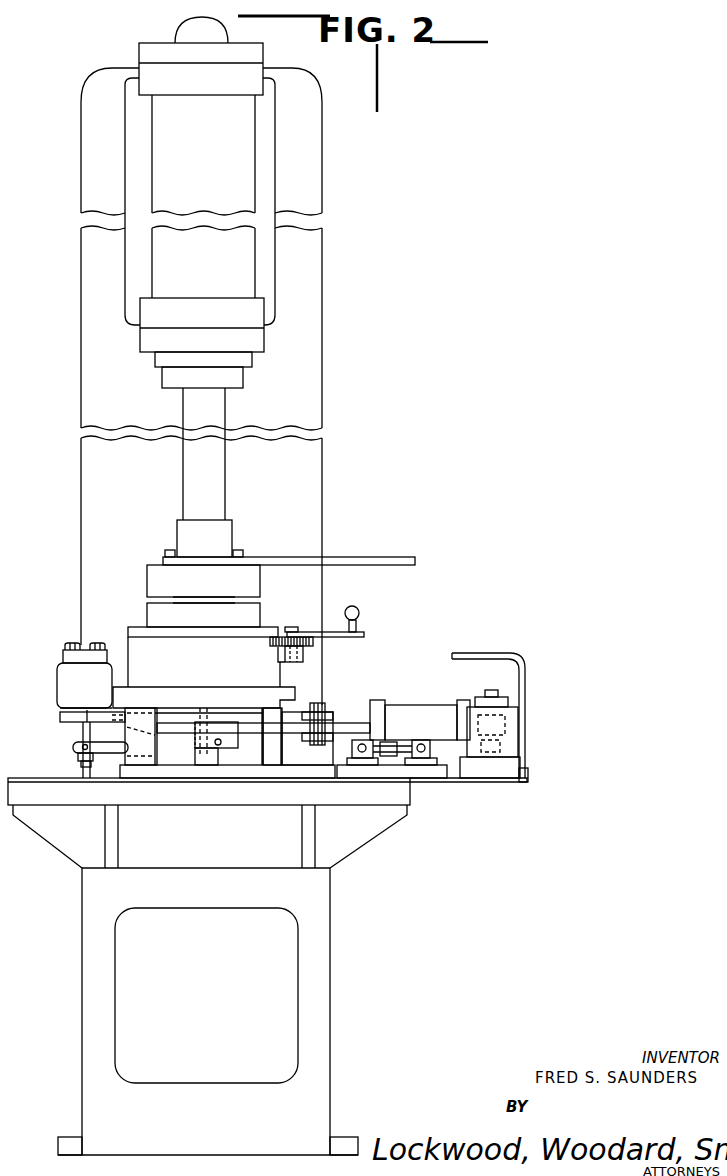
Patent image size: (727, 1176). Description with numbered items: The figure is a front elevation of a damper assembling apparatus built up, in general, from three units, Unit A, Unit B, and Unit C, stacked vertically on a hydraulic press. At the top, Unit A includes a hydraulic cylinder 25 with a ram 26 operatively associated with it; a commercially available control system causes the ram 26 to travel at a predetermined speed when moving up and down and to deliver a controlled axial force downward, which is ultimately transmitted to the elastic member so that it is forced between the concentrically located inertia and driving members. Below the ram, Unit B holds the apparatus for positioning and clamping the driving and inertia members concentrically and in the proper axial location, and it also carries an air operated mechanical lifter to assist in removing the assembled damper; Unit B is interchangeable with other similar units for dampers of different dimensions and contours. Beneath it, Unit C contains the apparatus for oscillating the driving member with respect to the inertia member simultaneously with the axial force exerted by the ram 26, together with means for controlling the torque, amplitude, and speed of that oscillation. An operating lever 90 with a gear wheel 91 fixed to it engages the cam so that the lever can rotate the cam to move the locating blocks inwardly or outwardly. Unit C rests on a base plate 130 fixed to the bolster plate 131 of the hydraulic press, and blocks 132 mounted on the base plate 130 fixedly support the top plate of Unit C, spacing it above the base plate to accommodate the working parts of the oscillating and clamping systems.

The hydraulic cylinder 25 is at (214, 170).
The ram 26 is at (193, 410).
The operating lever 90 is at (352, 637).
The gear wheel 91 is at (276, 646).
The base plate 130 is at (472, 773).
The bolster plate 131 is at (403, 793).
The blocks 132 is at (133, 746).
The Unit A is at (294, 272).
The Unit B is at (287, 591).
The Unit C is at (302, 697).